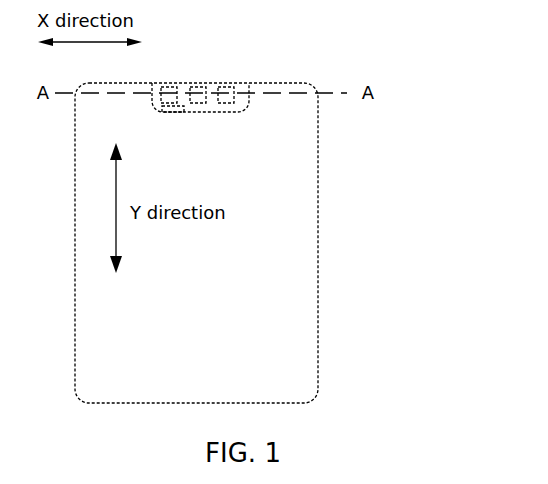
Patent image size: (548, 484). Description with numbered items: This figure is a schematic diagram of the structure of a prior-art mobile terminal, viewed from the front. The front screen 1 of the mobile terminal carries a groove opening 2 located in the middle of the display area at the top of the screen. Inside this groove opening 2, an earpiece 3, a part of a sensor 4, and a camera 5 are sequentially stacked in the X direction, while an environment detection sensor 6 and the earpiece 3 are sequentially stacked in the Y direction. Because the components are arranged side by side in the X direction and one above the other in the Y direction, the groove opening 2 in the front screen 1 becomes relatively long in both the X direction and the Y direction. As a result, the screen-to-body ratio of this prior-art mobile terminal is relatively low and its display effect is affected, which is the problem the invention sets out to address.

The front screen 1 is at (308, 208).
The groove opening 2 is at (245, 86).
The earpiece 3 is at (170, 88).
The sensor 4 is at (198, 88).
The camera 5 is at (224, 88).
The environment detection sensor 6 is at (175, 110).